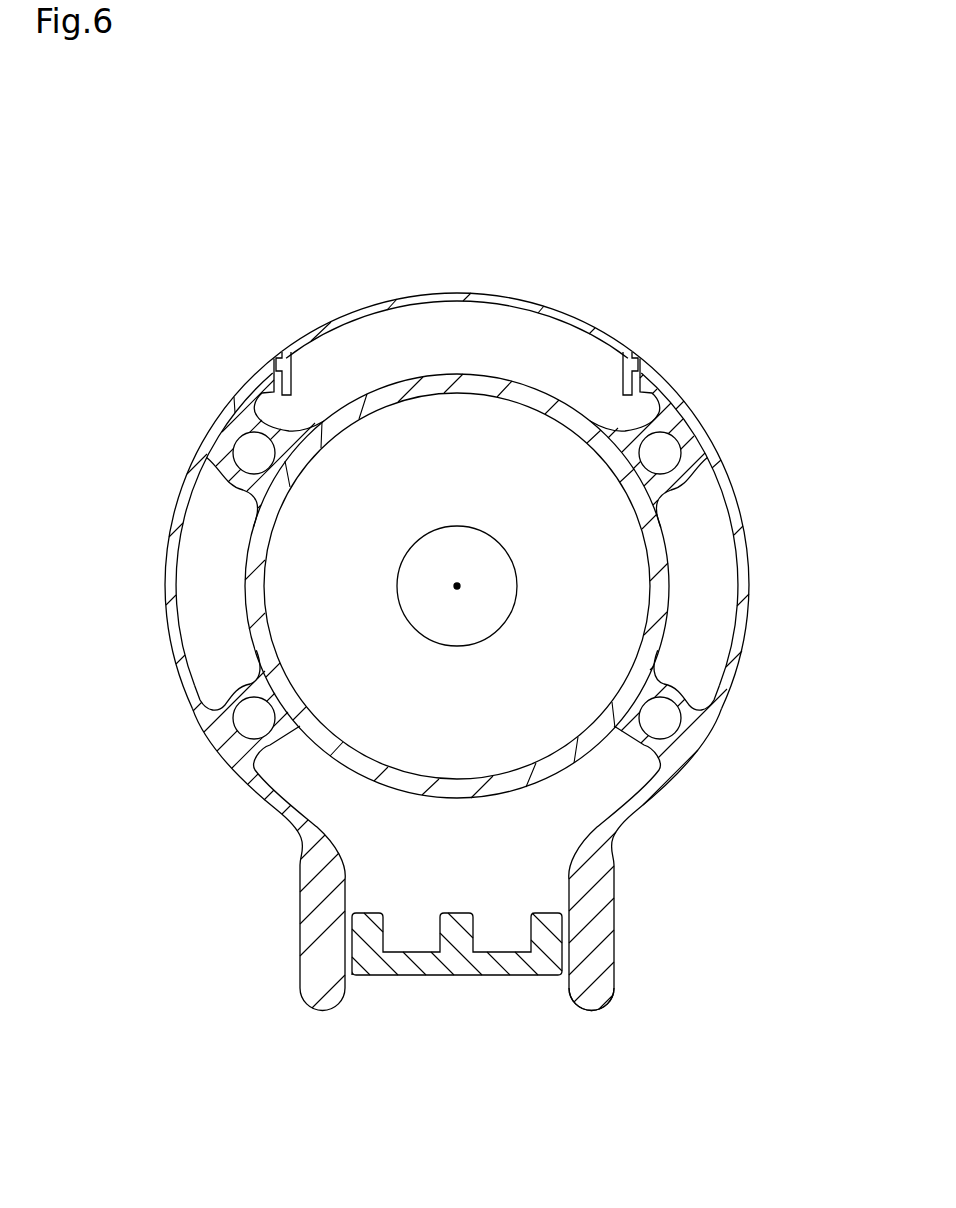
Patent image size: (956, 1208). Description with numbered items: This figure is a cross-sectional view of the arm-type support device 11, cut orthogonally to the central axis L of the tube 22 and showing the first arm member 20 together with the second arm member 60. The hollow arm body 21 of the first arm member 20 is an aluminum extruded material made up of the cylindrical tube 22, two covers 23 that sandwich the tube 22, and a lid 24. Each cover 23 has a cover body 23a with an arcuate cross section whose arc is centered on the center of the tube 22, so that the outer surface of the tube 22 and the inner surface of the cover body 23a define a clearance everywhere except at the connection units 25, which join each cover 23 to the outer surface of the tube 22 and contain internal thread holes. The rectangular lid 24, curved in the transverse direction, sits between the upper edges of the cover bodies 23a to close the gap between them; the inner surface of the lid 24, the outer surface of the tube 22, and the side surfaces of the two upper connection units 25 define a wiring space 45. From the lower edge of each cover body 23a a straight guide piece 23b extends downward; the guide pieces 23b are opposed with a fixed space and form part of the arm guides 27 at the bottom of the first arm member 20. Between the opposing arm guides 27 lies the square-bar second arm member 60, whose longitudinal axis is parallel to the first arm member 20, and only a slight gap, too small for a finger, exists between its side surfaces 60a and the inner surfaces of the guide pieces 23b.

The arm-type support device 11 is at (458, 650).
The first arm member 20 is at (458, 650).
The arm body 21 is at (717, 455).
The tube 22 is at (653, 535).
The cover 23 is at (458, 830).
The cover body 23a is at (205, 700).
The guide piece 23b is at (228, 803).
The lid 24 is at (462, 292).
The connection unit 25 is at (633, 427).
The arm guide 27 is at (611, 1025).
The wiring space 45 is at (407, 328).
The second arm member 60 is at (457, 980).
The side surface 60a is at (347, 952).
The central axis L is at (455, 582).